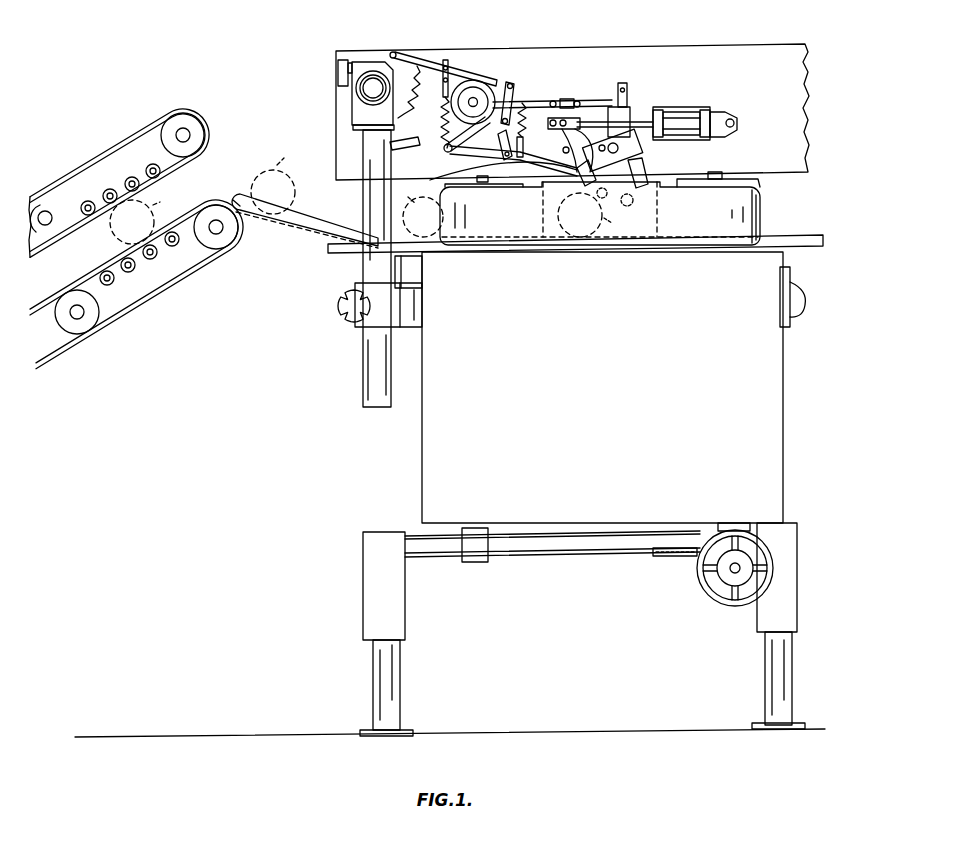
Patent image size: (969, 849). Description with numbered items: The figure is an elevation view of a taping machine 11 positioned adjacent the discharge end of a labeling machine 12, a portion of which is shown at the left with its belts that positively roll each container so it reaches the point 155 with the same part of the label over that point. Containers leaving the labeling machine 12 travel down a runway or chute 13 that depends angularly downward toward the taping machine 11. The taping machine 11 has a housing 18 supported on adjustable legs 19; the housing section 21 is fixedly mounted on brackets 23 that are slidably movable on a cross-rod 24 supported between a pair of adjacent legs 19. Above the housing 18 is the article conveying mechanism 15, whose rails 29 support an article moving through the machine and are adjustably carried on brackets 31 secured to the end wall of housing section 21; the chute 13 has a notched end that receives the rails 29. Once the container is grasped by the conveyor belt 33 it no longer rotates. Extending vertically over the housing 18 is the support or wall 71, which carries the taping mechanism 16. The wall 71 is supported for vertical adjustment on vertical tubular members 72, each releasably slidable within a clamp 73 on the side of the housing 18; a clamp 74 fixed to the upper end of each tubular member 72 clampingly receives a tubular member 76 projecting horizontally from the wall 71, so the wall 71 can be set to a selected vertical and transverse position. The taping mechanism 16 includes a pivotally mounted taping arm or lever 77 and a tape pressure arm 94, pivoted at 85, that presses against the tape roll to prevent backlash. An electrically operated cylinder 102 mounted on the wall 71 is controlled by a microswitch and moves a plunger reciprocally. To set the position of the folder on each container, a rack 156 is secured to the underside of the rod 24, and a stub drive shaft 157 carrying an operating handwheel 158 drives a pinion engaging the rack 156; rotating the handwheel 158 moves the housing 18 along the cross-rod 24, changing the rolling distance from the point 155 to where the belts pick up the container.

The taping machine 11 is at (328, 422).
The labeling machine 12 is at (148, 347).
The runway or chute 13 is at (300, 228).
The article conveying mechanism 15 is at (773, 198).
The taping mechanism 16 is at (703, 63).
The housing 18 is at (407, 467).
The adjustable legs 19 is at (393, 668).
The housing section 21 is at (602, 387).
The brackets 23 is at (478, 550).
The cross-rod 24 is at (570, 542).
The rails 29 is at (345, 248).
The brackets 31 is at (420, 268).
The conveyor belt 33 is at (763, 222).
The support or wall 71 is at (567, 60).
The tubular members 72 is at (370, 195).
The clamp 73 is at (355, 325).
The clamp 74 is at (363, 60).
The tubular member 76 is at (355, 93).
The taping arm or lever 77 is at (558, 143).
The pivot 85 is at (396, 53).
The tape pressure arm 94 is at (487, 79).
The electrically operated cylinder 102 is at (710, 107).
The point 155 is at (213, 200).
The rack 156 is at (670, 558).
The stub drive shaft 157 is at (735, 573).
The operating handwheel 158 is at (713, 597).